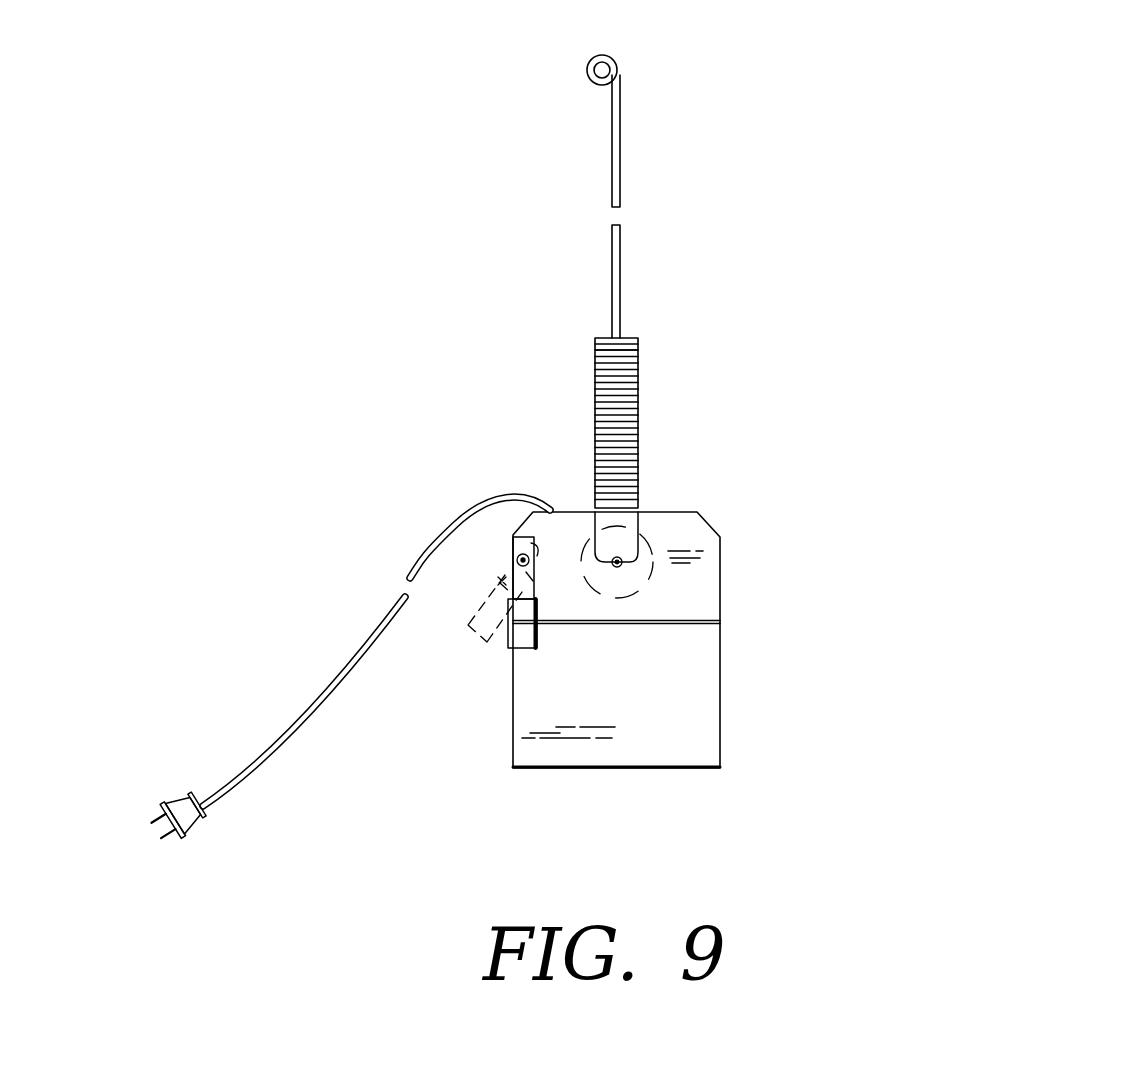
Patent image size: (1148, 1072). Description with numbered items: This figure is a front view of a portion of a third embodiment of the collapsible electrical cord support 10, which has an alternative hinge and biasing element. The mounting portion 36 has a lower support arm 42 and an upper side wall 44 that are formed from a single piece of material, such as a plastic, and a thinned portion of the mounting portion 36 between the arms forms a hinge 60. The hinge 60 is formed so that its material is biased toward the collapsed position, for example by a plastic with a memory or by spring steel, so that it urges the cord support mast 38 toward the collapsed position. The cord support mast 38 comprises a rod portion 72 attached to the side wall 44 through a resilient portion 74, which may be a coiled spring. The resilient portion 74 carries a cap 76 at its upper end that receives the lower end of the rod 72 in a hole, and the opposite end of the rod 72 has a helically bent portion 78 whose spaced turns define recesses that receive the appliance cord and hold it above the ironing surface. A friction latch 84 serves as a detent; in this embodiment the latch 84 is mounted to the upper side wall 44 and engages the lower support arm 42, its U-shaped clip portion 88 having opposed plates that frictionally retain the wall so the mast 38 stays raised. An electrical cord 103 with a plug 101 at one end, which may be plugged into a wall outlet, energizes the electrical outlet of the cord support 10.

The collapsible electrical cord support 10 is at (640, 408).
The mounting portion 36 is at (868, 765).
The cord support mast 38 is at (655, 238).
The lower support arm 42 is at (683, 683).
The side wall 44 is at (697, 587).
The hinge 60 is at (720, 620).
The rod portion 72 is at (622, 173).
The resilient portion 74 is at (622, 402).
The cap 76 is at (625, 338).
The helically bent portion 78 is at (618, 70).
The friction latch 84 is at (515, 580).
The clip portion 88 is at (520, 638).
The plug 101 is at (193, 828).
The electrical cord 103 is at (291, 728).